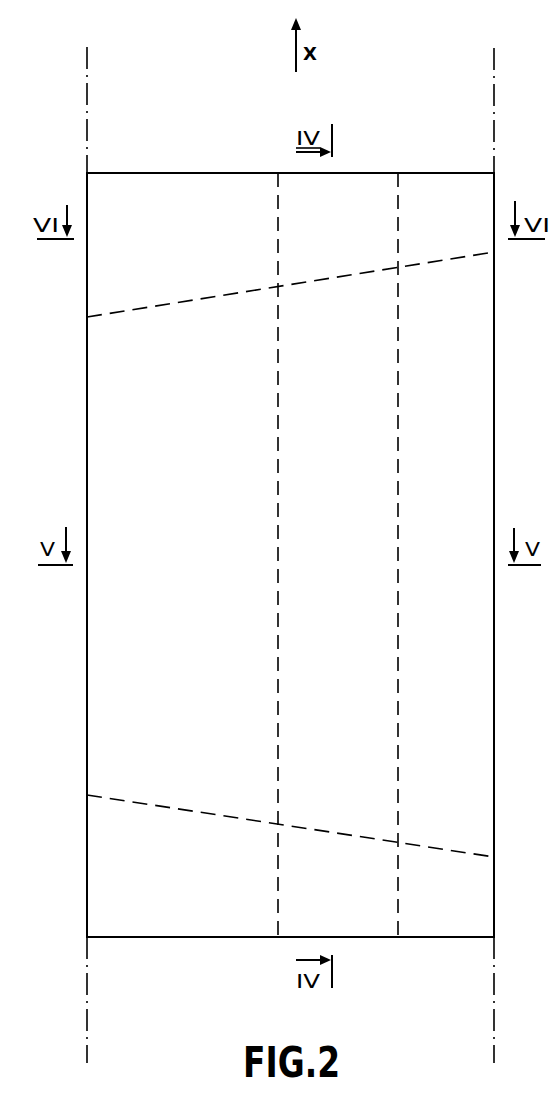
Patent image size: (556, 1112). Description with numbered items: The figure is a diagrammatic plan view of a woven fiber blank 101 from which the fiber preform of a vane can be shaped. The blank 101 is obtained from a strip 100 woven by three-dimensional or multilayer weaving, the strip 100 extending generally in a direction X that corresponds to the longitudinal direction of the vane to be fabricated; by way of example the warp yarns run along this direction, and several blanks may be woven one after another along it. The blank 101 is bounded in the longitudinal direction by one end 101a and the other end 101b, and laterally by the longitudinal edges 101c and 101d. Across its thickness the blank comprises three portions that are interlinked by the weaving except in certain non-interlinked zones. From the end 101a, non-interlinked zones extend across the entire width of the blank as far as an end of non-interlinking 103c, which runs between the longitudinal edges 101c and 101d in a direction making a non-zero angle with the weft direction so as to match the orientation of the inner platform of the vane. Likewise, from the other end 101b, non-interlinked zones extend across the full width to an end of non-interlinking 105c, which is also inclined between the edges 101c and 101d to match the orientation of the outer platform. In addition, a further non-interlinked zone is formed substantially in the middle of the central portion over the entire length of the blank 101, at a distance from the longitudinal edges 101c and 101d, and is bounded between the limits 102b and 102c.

The strip 100 is at (87, 68).
The fiber blank 101 is at (81, 634).
The end of the blank 101a is at (183, 938).
The other end of the blank 101b is at (183, 172).
The longitudinal edge 101c is at (86, 455).
The longitudinal edge 101d is at (495, 440).
The limit 102b is at (277, 745).
The limit 102c is at (399, 720).
The end of non-interlinking 103c is at (208, 810).
The end of non-interlinking 105c is at (207, 300).